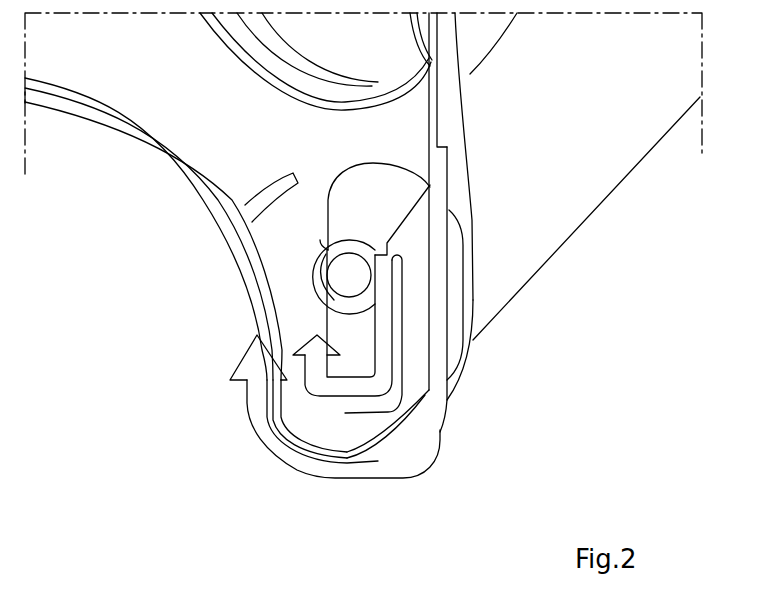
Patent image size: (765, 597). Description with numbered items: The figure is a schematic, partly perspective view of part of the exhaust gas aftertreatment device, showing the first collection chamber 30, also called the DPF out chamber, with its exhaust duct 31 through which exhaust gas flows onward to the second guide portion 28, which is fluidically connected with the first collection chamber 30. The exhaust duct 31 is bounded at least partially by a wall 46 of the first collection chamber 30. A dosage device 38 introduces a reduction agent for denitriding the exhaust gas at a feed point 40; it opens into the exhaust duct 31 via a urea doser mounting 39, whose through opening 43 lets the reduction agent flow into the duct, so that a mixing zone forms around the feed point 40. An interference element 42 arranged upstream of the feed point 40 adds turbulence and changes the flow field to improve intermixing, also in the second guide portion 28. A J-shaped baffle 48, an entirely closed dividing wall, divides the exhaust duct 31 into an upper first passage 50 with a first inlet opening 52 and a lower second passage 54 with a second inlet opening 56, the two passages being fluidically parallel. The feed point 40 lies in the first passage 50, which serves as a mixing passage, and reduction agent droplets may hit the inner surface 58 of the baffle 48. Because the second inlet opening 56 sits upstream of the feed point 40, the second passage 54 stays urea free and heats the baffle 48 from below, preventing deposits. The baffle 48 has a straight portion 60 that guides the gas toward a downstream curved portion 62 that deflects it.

The second guide portion 28 is at (637, 163).
The first collection chamber 30 is at (138, 143).
The exhaust duct 31 is at (188, 92).
The dosage device 38 is at (323, 294).
The urea doser mounting 39 is at (347, 250).
The feed point 40 is at (322, 238).
The interference element 42 is at (262, 182).
The through opening 43 is at (367, 267).
The wall 46 is at (448, 113).
The baffle 48 is at (350, 435).
The first passage 50 is at (402, 320).
The first inlet opening 52 is at (402, 188).
The second passage 54 is at (450, 450).
The second inlet opening 56 is at (465, 178).
The inner surface 58 is at (355, 417).
The straight portion 60 is at (475, 281).
The curved portion 62 is at (386, 436).